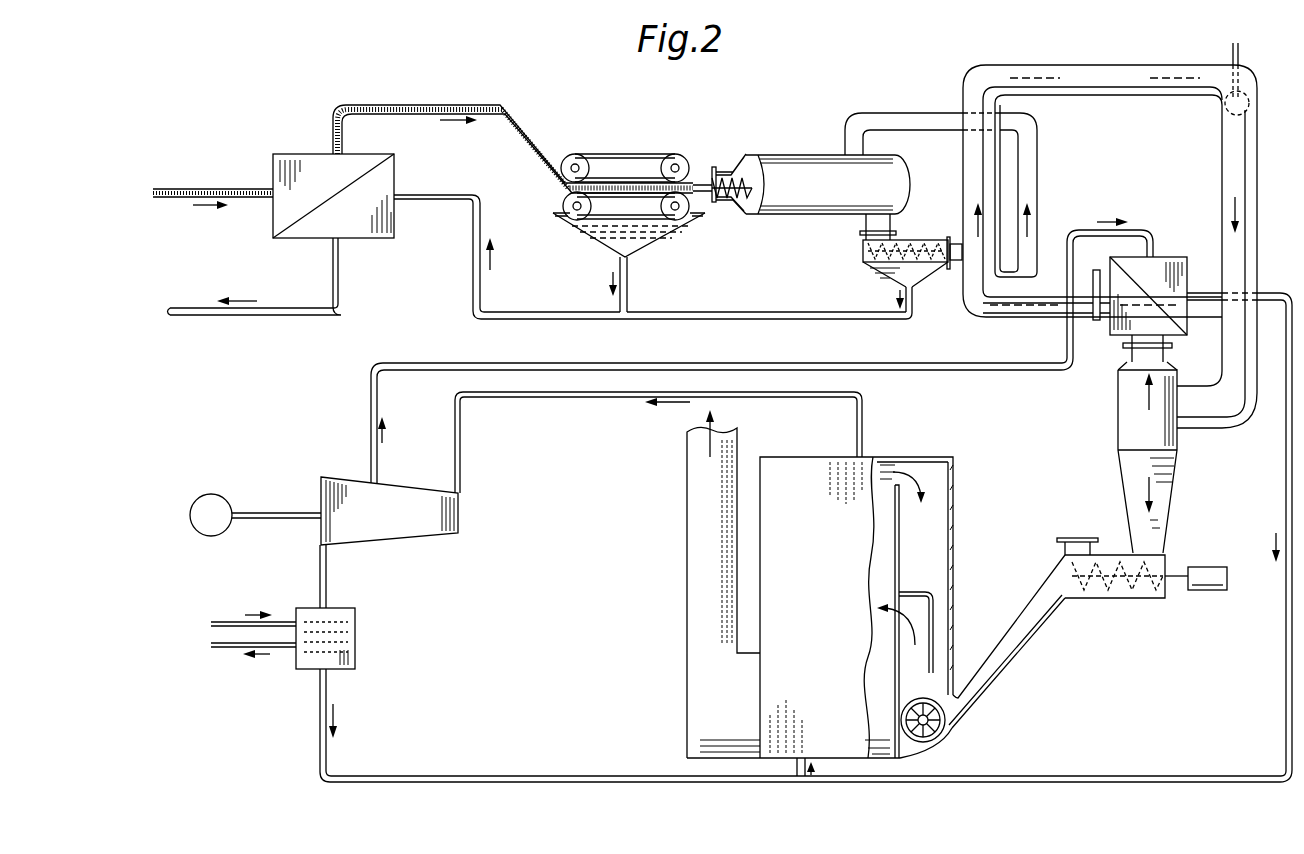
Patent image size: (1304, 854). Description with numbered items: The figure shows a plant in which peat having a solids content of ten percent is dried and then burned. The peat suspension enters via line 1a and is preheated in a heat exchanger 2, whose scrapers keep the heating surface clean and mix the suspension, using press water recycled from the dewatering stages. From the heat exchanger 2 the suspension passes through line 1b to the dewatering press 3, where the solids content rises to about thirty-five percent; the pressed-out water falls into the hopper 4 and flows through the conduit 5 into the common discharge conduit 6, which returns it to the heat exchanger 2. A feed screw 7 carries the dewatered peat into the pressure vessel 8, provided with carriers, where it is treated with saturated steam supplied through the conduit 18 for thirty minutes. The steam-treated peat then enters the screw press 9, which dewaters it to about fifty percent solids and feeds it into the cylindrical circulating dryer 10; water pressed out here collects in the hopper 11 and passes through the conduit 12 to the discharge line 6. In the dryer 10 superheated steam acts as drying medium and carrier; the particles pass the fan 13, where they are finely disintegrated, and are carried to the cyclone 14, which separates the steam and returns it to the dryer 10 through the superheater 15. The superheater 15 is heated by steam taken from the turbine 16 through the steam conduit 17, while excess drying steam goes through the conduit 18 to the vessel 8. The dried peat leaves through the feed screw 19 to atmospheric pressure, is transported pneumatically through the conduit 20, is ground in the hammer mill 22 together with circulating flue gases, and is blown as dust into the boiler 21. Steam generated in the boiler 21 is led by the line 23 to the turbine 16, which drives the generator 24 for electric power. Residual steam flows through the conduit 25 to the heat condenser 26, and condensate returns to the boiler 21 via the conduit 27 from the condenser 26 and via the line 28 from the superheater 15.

The line 1a is at (195, 188).
The line 1b is at (421, 105).
The heat exchanger 2 is at (285, 153).
The dewatering press 3 is at (637, 154).
The hopper 4 is at (660, 237).
The conduit 5 is at (628, 292).
The common discharge conduit 6 is at (297, 308).
The feed screw 7 is at (716, 170).
The pressure vessel 8 is at (788, 157).
The screw press 9 is at (925, 243).
The cylindrical circulating dryer 10 is at (1112, 65).
The hopper 11 is at (884, 274).
The conduit 12 is at (914, 301).
The fan 13 is at (1262, 78).
The cyclone 14 is at (1118, 430).
The superheater 15 is at (1164, 257).
The turbine 16 is at (393, 533).
The steam conduit 17 is at (683, 363).
The conduit 18 is at (924, 113).
The feed screw 19 is at (1118, 598).
The conduit 20 is at (1018, 664).
The boiler 21 is at (953, 503).
The hammer mill 22 is at (950, 723).
The line 23 is at (580, 397).
The generator 24 is at (209, 496).
The conduit 25 is at (326, 589).
The heat condenser 26 is at (355, 641).
The conduit 27 is at (512, 776).
The line 28 is at (1286, 607).